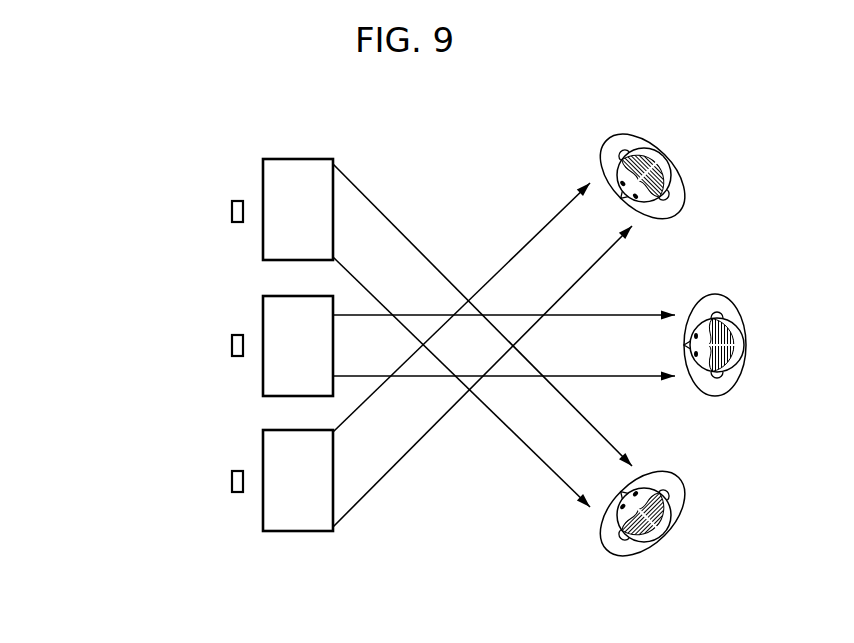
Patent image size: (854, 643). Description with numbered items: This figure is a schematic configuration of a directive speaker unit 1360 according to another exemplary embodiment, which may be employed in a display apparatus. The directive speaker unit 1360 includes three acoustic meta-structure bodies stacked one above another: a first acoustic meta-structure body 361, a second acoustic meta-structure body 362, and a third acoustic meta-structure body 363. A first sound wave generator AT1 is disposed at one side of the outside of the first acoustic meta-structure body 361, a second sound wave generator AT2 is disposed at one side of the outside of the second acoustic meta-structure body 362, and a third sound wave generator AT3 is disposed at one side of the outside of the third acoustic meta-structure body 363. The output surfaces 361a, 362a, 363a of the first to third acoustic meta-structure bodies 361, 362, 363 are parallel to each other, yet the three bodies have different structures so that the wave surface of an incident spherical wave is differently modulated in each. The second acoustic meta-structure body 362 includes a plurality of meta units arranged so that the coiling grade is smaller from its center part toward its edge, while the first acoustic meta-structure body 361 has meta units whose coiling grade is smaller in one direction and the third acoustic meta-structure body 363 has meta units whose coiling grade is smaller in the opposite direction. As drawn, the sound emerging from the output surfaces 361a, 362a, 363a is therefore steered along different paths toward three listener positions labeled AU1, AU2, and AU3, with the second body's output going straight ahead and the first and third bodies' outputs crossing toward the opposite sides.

The directive speaker unit 1360 is at (150, 150).
The first acoustic meta-structure body 361 is at (272, 170).
The second acoustic meta-structure body 362 is at (272, 306).
The third acoustic meta-structure body 363 is at (272, 441).
The output surface of the first acoustic meta-structure body 361a is at (333, 222).
The output surface of the second acoustic meta-structure body 362a is at (333, 347).
The output surface of the third acoustic meta-structure body 363a is at (334, 483).
The first sound wave generator AT1 is at (232, 212).
The second sound wave generator AT2 is at (232, 347).
The third sound wave generator AT3 is at (232, 482).
The first audience/listener AU1 is at (649, 514).
The second audience/listener AU2 is at (742, 345).
The third audience/listener AU3 is at (653, 176).